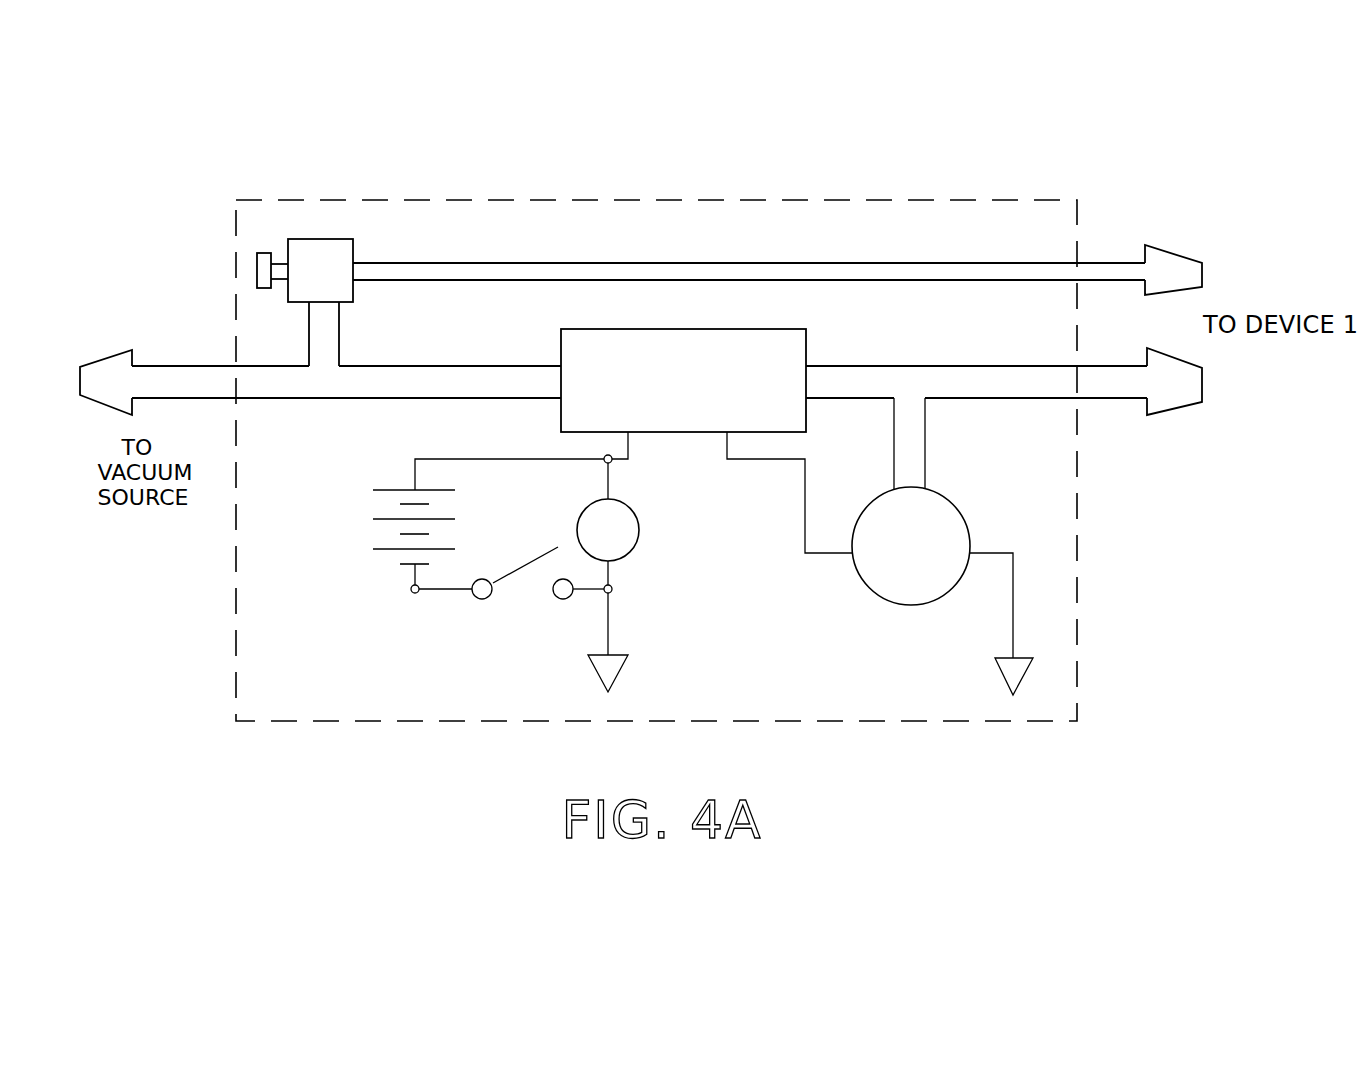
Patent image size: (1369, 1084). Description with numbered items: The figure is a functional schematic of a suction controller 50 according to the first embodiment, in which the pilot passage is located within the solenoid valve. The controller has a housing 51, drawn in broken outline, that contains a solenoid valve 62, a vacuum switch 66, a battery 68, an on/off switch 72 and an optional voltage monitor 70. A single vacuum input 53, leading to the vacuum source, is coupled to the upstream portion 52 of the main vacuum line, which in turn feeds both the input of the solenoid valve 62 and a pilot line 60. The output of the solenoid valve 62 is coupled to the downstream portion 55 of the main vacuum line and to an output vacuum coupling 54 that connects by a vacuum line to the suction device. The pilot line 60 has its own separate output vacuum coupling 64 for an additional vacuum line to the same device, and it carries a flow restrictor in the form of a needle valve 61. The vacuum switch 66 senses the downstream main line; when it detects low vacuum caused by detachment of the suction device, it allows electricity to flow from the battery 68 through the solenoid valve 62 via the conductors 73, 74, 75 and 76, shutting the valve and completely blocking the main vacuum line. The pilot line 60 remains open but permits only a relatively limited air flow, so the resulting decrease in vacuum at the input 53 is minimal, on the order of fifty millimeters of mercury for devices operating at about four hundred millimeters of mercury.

The suction controller 50 is at (656, 424).
The housing 51 is at (480, 200).
The upstream portion of the main vacuum line 52 is at (176, 366).
The vacuum input 53 is at (96, 362).
The output vacuum coupling 54 is at (1178, 410).
The downstream portion of the main vacuum line 55 is at (1120, 398).
The pilot line 60 is at (540, 263).
The needle valve 61 is at (310, 239).
The solenoid valve 62 is at (730, 329).
The output vacuum coupling 64 is at (1168, 250).
The vacuum switch 66 is at (900, 605).
The battery 68 is at (375, 557).
The voltage monitor 70 is at (639, 536).
The on/off switch 72 is at (512, 575).
The conductor 73 is at (455, 459).
The conductor 74 is at (608, 620).
The conductor 75 is at (805, 517).
The conductor 76 is at (1013, 602).